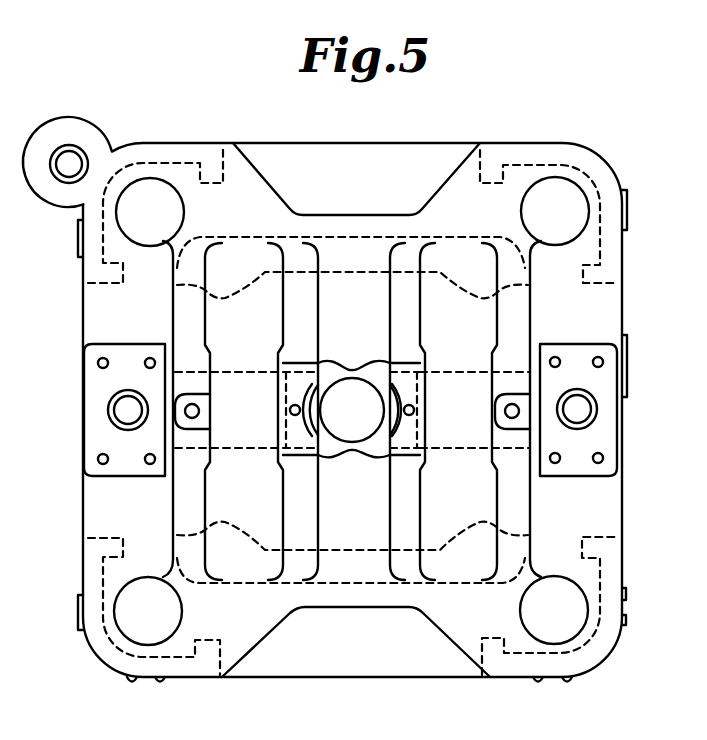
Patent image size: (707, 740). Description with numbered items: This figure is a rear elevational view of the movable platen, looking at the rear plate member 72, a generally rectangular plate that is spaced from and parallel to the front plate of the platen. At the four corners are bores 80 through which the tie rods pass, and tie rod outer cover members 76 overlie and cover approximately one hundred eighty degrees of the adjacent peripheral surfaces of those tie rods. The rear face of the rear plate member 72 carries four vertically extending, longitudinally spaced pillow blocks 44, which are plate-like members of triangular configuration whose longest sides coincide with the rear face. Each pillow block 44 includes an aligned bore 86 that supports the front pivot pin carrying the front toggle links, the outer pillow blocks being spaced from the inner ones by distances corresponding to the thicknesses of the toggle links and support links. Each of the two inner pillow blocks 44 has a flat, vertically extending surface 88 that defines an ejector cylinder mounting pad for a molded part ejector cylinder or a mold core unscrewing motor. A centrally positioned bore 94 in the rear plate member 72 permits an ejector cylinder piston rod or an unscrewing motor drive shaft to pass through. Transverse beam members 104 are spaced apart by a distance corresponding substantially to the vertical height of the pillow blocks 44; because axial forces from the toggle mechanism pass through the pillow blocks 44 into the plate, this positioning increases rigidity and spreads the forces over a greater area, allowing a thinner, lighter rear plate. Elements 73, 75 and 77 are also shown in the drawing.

The pillow block 44 is at (297, 278).
The rear plate member 72 is at (607, 293).
The mounting plate 73 is at (95, 423).
The screw holes 75 is at (100, 360).
The tie rod outer cover member 76 is at (164, 150).
The boss 77 is at (110, 404).
The bore 80 is at (170, 184).
The aligned bore 86 is at (277, 379).
The flat vertically extending surface 88 is at (401, 446).
The centrally positioned bore 94 is at (340, 388).
The transverse beam member 104 is at (356, 243).